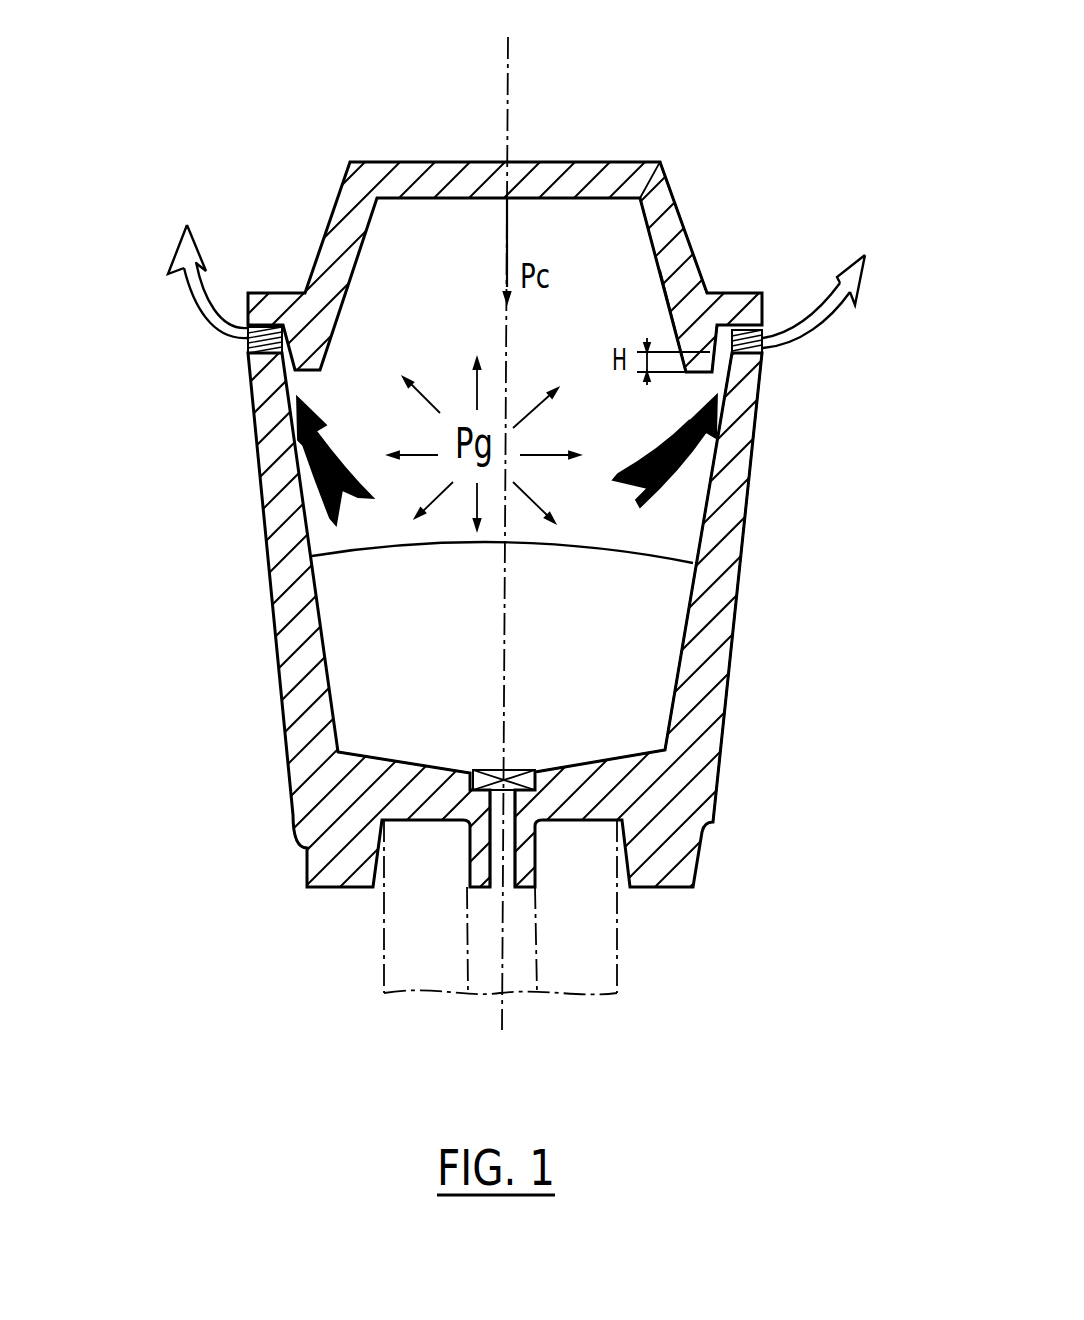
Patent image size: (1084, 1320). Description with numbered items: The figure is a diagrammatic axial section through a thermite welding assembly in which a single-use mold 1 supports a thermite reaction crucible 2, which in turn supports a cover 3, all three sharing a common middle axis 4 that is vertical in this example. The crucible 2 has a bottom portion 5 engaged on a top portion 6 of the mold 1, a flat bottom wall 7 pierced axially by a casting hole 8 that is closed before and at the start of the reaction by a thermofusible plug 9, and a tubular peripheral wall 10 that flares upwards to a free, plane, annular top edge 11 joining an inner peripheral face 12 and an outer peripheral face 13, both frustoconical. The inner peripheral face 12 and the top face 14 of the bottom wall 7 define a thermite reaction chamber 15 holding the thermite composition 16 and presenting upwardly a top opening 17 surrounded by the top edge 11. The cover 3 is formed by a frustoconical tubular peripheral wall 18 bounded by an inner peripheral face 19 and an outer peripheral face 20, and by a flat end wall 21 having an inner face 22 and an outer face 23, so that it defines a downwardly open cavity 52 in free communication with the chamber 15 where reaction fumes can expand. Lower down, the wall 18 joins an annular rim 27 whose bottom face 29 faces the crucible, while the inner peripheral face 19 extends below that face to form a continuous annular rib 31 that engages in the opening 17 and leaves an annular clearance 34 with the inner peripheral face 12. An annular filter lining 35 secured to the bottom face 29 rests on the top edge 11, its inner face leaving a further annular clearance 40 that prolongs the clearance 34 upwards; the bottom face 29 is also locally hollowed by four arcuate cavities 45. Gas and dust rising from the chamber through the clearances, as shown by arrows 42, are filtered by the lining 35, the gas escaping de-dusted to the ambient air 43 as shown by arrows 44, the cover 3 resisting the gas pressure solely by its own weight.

The mold 1 is at (383, 967).
The thermite reaction crucible 2 is at (267, 698).
The cover 3 is at (315, 180).
The middle axis 4 is at (512, 72).
The bottom portion 5 is at (298, 863).
The top portion 6 is at (328, 907).
The bottom wall 7 is at (372, 788).
The casting hole 8 is at (503, 888).
The thermofusible plug 9 is at (515, 763).
The peripheral wall 10 is at (730, 584).
The top edge 11 is at (767, 350).
The inner peripheral face 12 is at (705, 517).
The outer peripheral face 13 is at (747, 508).
The top face 14 is at (608, 760).
The thermite reaction chamber 15 is at (592, 510).
The thermite composition 16 is at (597, 647).
The top opening 17 is at (573, 346).
The tubular peripheral wall 18 is at (690, 232).
The inner peripheral face 19 is at (655, 258).
The outer peripheral face 20 is at (672, 190).
The end wall 21 is at (577, 187).
The inner face 22 is at (425, 198).
The outer face 23 is at (440, 162).
The annular rim 27 is at (737, 293).
The bottom face 29 is at (765, 330).
The annular rib 31 is at (677, 315).
The annular clearance 34 is at (715, 377).
The filter lining 35 is at (243, 353).
The annular clearance 40 is at (720, 343).
The arrows 42 is at (338, 445).
The ambient air 43 is at (877, 172).
The arrows 44 is at (202, 308).
The arcuate cavities 45 is at (273, 300).
The downwardly open cavity 52 is at (453, 318).